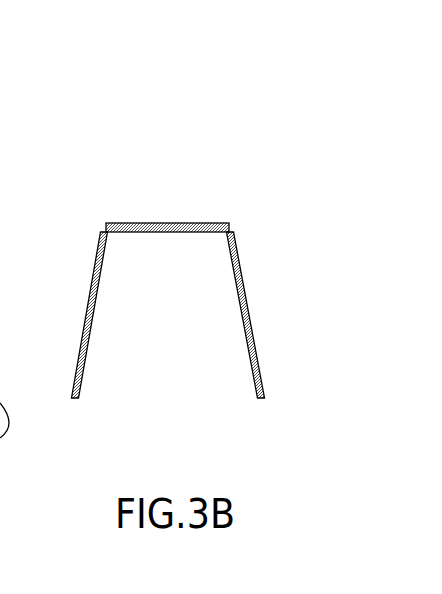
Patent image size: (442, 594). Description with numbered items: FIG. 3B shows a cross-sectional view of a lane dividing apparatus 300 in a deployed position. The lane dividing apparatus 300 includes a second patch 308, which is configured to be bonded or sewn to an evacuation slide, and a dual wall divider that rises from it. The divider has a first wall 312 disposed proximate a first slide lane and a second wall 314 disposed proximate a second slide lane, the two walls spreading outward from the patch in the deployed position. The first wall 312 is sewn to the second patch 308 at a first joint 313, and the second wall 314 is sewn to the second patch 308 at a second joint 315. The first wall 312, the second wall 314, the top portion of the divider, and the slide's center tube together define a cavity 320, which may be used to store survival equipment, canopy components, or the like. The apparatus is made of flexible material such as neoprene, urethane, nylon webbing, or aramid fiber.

The lane dividing apparatus 300 is at (110, 166).
The second patch 308 is at (133, 223).
The first wall 312 is at (242, 287).
The first joint 313 is at (225, 229).
The second wall 314 is at (93, 296).
The second joint 315 is at (113, 235).
The cavity 320 is at (168, 335).